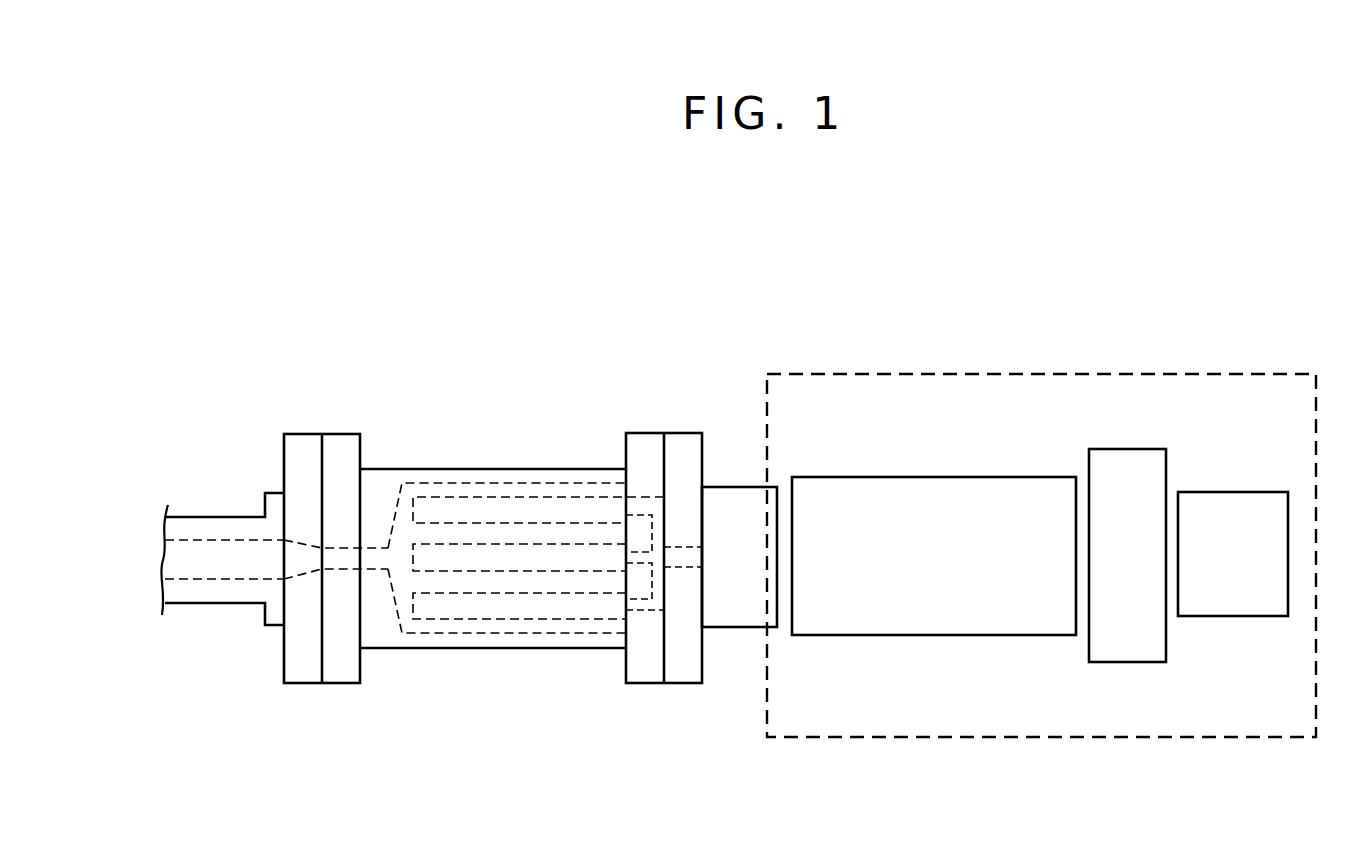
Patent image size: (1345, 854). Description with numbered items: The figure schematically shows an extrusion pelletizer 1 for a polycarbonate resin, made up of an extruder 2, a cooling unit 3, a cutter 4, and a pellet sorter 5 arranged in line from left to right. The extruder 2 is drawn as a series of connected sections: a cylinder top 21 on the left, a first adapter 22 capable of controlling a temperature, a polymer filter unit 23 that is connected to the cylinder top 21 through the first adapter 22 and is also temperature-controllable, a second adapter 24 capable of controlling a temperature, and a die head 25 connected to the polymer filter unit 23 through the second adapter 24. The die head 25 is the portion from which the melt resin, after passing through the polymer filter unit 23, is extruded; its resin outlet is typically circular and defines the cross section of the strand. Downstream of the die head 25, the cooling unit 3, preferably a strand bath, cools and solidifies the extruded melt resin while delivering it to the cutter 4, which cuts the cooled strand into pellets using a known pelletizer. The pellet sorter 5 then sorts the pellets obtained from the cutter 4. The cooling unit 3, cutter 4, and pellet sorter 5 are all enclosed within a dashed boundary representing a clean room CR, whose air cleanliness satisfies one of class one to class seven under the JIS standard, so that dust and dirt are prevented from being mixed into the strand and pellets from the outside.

The extrusion pelletizer 1 is at (774, 283).
The extruder 2 is at (235, 354).
The cylinder top 21 is at (210, 516).
The first adapter 22 is at (306, 433).
The polymer filter unit 23 is at (393, 468).
The second adapter 24 is at (650, 432).
The die head 25 is at (735, 486).
The clean room CR is at (893, 373).
The cooling unit 3 is at (948, 476).
The cutter 4 is at (1133, 448).
The pellet sorter 5 is at (1240, 491).